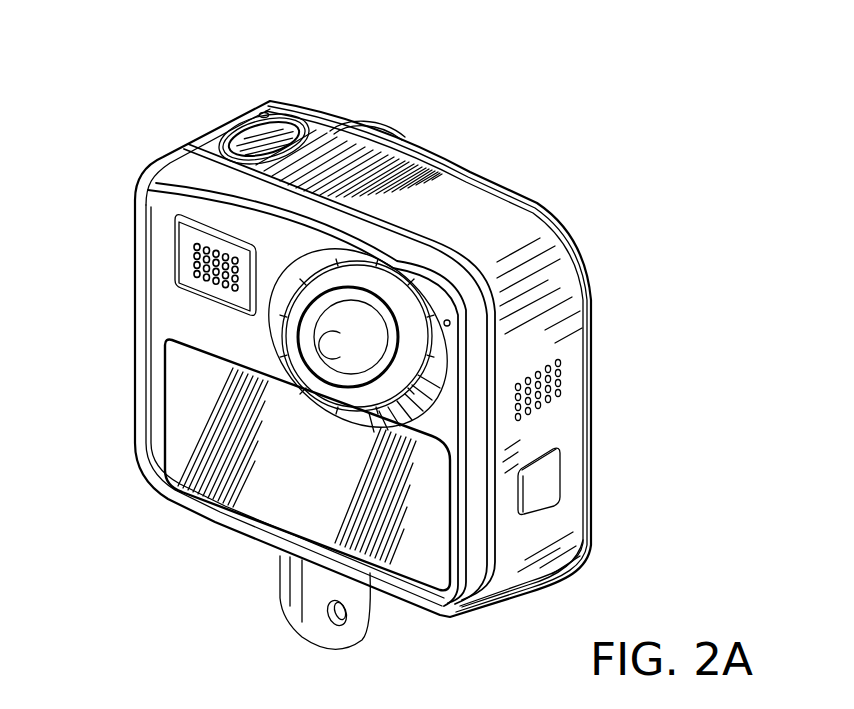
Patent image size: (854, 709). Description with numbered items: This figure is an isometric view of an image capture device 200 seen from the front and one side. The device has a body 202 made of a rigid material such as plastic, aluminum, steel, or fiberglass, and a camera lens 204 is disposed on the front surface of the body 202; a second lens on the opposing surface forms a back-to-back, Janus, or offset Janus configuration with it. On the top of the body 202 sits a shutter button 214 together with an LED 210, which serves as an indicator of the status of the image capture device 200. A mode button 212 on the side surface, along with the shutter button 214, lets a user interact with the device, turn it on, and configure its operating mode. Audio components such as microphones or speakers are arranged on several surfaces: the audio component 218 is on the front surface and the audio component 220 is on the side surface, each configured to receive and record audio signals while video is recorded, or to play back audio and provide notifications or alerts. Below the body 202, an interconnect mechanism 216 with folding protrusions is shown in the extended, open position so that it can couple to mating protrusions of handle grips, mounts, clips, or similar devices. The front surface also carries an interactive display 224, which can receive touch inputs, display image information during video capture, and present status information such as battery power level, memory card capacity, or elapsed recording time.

The image capture device 200 is at (632, 175).
The body 202 is at (134, 330).
The camera lens 204 is at (325, 362).
The LED 210 is at (265, 110).
The mode button 212 is at (550, 474).
The shutter button 214 is at (276, 138).
The interconnect mechanism 216 is at (312, 592).
The audio component 218 is at (195, 270).
The audio component 220 is at (562, 386).
The interactive display 224 is at (431, 572).